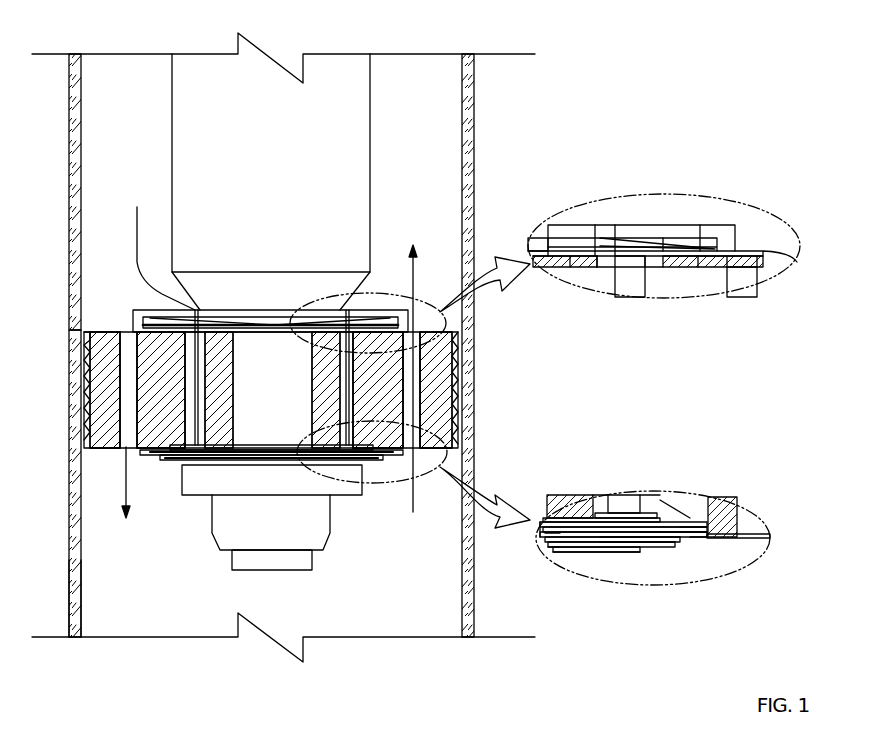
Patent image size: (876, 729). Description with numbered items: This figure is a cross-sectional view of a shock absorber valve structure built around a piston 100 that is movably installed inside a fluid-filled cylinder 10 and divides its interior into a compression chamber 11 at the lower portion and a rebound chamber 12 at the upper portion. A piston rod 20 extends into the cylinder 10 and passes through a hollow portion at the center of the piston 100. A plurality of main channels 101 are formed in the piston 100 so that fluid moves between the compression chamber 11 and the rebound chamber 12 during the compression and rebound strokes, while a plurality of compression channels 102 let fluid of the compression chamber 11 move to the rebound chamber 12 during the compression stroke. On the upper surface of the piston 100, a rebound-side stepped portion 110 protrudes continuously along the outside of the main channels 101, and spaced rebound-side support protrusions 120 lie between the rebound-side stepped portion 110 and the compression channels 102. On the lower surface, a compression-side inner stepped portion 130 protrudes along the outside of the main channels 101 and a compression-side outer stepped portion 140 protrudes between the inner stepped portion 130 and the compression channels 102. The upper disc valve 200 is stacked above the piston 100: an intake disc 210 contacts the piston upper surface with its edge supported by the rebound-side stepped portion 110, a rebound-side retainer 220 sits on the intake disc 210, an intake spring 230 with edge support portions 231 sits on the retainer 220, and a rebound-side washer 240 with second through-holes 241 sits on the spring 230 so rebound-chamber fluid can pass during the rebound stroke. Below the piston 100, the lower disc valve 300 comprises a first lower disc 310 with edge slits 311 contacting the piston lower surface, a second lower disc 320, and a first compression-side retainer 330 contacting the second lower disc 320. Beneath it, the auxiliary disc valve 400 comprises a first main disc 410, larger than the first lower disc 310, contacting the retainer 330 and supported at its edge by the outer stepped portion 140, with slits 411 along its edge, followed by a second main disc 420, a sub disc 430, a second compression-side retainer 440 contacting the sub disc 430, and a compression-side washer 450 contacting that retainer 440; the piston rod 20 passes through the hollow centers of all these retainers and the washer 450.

The cylinder 10 is at (470, 165).
The compression chamber 11 is at (114, 578).
The rebound chamber 12 is at (110, 108).
The piston rod 20 is at (331, 85).
The piston 100 is at (86, 338).
The main channels 101 is at (192, 372).
The compression channels 102 is at (128, 398).
The rebound-side stepped portion 110 is at (672, 248).
The rebound-side support protrusions 120 is at (718, 250).
The compression-side inner stepped portion 130 is at (645, 540).
The compression-side outer stepped portion 140 is at (695, 545).
The upper disc valve 200 is at (268, 312).
The intake disc 210 is at (548, 228).
The rebound-side retainer 220 is at (565, 258).
The intake spring 230 is at (573, 240).
The support portions 231 is at (585, 256).
The rebound-side washer 240 is at (757, 228).
The second through-holes 241 is at (644, 235).
The lower disc valve 300 is at (245, 448).
The first lower disc 310 is at (628, 518).
The slits 311 is at (655, 515).
The second lower disc 320 is at (545, 533).
The first compression-side retainer 330 is at (548, 548).
The auxiliary disc valve 400 is at (171, 458).
The first main disc 410 is at (617, 540).
The slits 411 is at (762, 549).
The second main disc 420 is at (710, 545).
The sub disc 430 is at (628, 542).
The second compression-side retainer 440 is at (555, 556).
The compression-side washer 450 is at (340, 490).